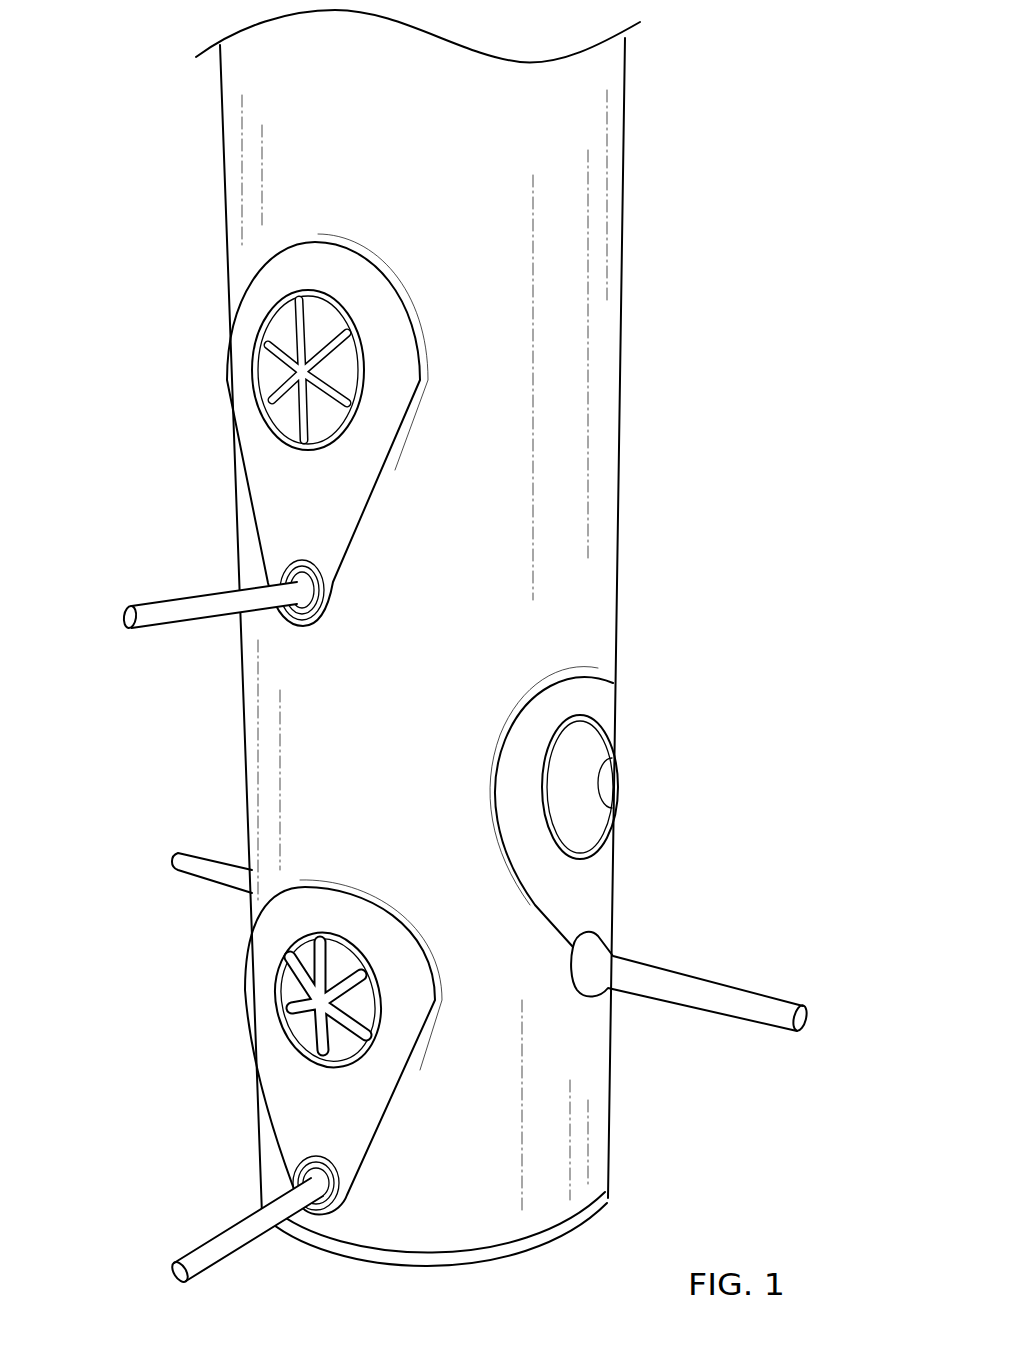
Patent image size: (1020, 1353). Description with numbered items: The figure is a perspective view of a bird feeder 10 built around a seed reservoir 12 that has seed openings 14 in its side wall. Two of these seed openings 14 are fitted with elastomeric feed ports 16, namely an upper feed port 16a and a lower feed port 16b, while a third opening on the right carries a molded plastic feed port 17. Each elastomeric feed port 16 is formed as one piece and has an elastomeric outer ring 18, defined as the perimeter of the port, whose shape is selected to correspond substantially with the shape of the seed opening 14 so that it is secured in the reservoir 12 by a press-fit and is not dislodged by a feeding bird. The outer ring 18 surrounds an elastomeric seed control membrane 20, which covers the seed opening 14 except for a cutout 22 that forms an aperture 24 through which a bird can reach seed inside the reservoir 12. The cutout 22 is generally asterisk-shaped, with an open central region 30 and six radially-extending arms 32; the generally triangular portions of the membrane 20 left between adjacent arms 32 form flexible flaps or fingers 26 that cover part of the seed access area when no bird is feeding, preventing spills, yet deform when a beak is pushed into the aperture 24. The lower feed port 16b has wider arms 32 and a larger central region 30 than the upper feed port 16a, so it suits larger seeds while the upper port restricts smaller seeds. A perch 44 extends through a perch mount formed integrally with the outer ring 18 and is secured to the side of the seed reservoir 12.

The bird feeder 10 is at (436, 656).
The seed reservoir 12 is at (610, 70).
The seed opening 14 is at (425, 378).
The elastomeric feed port 16 is at (238, 270).
The upper feed port 16a is at (407, 303).
The lower feed port 16b is at (265, 1012).
The molded plastic feed port 17 is at (595, 872).
The elastomeric outer ring 18 is at (402, 397).
The elastomeric seed control membrane 20 is at (325, 425).
The cutout 22 is at (312, 1004).
The aperture 24 is at (328, 996).
The flexible flaps or fingers 26 is at (318, 320).
The central region 30 is at (305, 372).
The radially-extending arms 32 is at (283, 342).
The perch 44 is at (200, 1258).